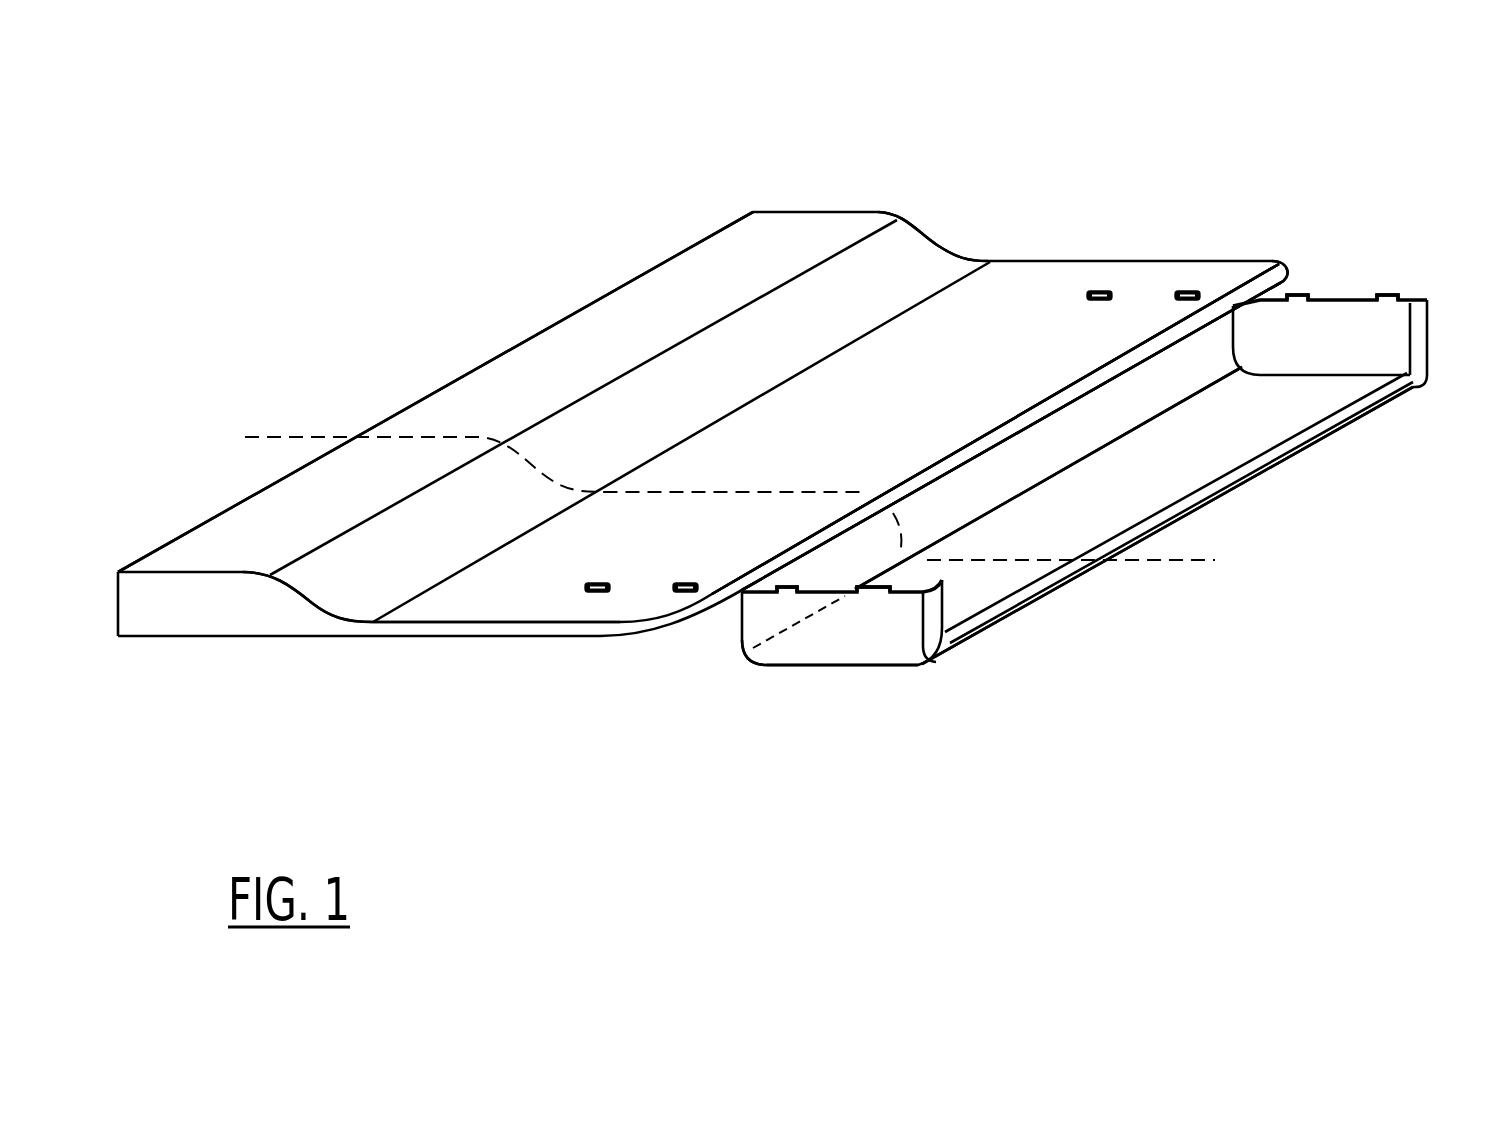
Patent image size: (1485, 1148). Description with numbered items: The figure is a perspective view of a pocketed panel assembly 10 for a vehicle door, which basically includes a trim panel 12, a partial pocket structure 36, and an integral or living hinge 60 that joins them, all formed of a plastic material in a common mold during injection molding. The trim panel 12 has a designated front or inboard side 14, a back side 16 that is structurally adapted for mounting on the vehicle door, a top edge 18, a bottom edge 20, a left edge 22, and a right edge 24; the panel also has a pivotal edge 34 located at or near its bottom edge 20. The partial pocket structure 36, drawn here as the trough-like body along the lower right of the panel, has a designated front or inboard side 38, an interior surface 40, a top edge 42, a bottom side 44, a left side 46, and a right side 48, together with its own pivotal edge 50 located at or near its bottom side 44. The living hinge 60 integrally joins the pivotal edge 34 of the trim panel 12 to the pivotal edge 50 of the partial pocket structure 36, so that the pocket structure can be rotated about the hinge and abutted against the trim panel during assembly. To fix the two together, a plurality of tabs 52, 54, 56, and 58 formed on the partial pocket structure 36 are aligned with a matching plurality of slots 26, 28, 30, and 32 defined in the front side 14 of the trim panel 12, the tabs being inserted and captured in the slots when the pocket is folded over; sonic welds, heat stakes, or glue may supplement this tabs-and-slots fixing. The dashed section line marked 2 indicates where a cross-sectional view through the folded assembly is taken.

The pocketed panel assembly 10 is at (222, 146).
The trim panel 12 is at (822, 206).
The front side 14 is at (708, 377).
The back side 16 is at (462, 646).
The top edge 18 is at (466, 375).
The bottom edge 20 is at (1290, 280).
The left edge 22 is at (300, 616).
The right edge 24 is at (952, 248).
The slot 26 is at (598, 581).
The slot 28 is at (690, 581).
The slot 30 is at (1098, 288).
The slot 32 is at (1188, 288).
The pivotal edge 34 is at (1097, 492).
The partial pocket structure 36 is at (877, 672).
The front side 38 is at (997, 624).
The interior surface 40 is at (1152, 450).
The top edge 42 is at (1349, 428).
The bottom side 44 is at (728, 626).
The left side 46 is at (843, 641).
The right side 48 is at (1386, 292).
The pivotal edge 50 is at (1017, 442).
The tab 52 is at (883, 580).
The tab 54 is at (790, 586).
The tab 56 is at (1422, 298).
The tab 58 is at (1300, 290).
The living hinge 60 is at (1079, 389).
The section line 2- 2 is at (245, 437).